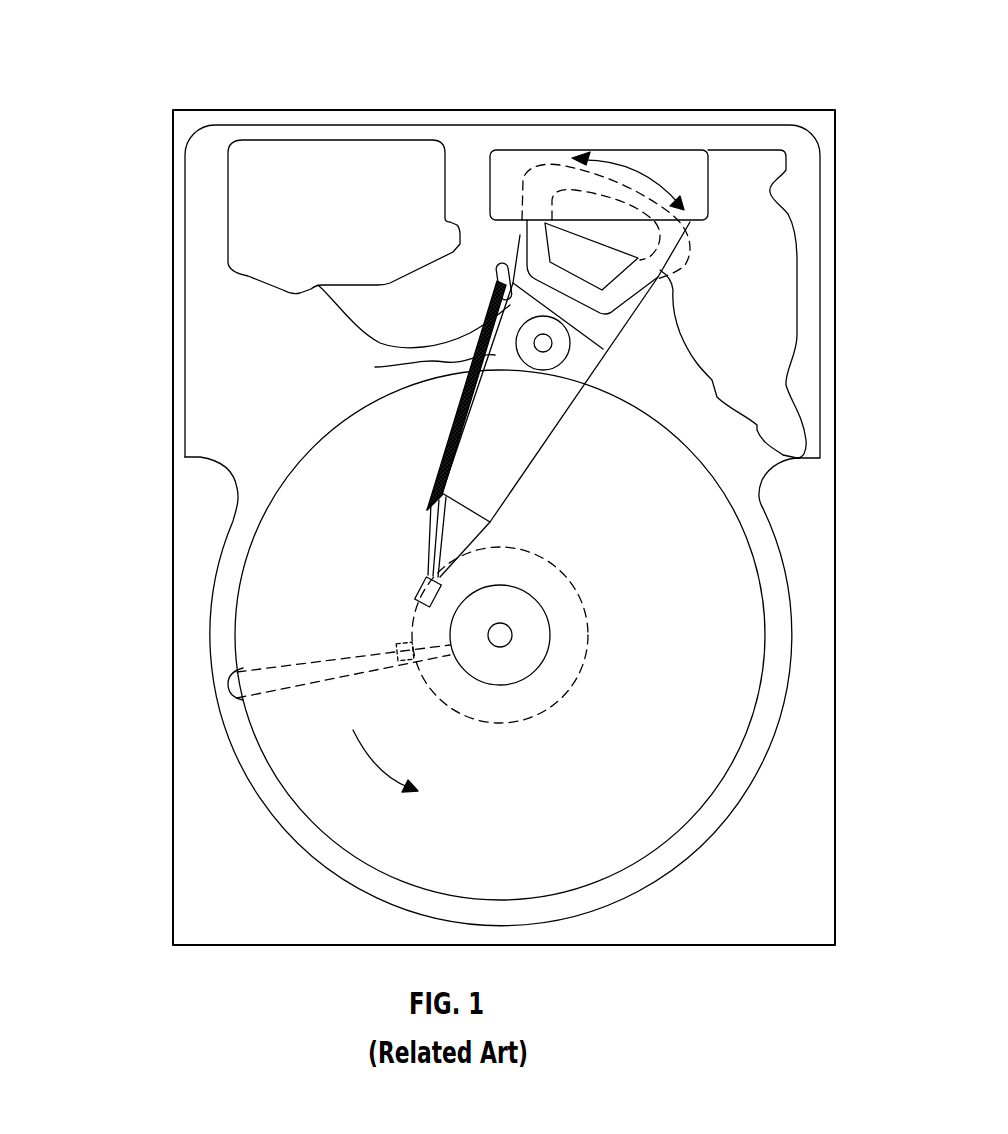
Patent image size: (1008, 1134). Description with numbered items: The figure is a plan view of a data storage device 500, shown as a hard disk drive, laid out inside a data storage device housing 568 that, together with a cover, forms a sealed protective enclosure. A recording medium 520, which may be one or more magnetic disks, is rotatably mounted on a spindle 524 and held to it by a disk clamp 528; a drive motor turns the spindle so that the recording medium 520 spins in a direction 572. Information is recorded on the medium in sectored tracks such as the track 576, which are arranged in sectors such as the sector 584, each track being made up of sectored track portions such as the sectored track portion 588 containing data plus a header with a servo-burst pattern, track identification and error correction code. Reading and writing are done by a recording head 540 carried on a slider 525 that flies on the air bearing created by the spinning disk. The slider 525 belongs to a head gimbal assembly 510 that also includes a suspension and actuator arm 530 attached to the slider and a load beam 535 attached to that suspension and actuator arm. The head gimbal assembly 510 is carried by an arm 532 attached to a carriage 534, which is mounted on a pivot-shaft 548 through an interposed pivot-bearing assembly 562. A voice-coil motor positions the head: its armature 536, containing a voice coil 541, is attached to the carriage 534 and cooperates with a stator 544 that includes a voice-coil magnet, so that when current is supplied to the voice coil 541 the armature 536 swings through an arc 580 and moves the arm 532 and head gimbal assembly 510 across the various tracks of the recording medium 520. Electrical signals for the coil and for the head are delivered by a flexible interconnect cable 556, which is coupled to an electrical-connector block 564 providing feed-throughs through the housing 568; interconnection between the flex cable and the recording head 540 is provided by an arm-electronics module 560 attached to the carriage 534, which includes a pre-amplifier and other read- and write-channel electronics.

The data storage device 500 is at (172, 43).
The head gimbal assembly 510 is at (107, 404).
The recording medium 520 is at (730, 623).
The spindle 524 is at (504, 637).
The slider 525 is at (427, 577).
The disk clamp 528 is at (508, 673).
The suspension and actuator arm 530 is at (433, 553).
The arm 532 is at (497, 468).
The carriage 534 is at (568, 388).
The load beam 535 is at (455, 532).
The armature 536 is at (518, 213).
The recording head 540 is at (413, 597).
The voice coil 541 is at (537, 232).
The stator 544 is at (790, 240).
The pivot-shaft 548 is at (546, 344).
The flexible interconnect cable 556 is at (342, 300).
The arm-electronics module 560 is at (495, 313).
The pivot-bearing assembly 562 is at (413, 370).
The electrical-connector block 564 is at (248, 215).
The data storage device housing 568 is at (818, 123).
The direction 572 is at (385, 765).
The track 576 is at (560, 570).
The arc 580 is at (617, 160).
The sector 584 is at (228, 685).
The sectored track portion 588 is at (397, 652).